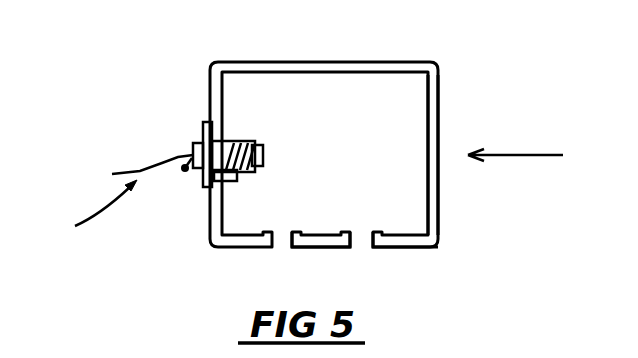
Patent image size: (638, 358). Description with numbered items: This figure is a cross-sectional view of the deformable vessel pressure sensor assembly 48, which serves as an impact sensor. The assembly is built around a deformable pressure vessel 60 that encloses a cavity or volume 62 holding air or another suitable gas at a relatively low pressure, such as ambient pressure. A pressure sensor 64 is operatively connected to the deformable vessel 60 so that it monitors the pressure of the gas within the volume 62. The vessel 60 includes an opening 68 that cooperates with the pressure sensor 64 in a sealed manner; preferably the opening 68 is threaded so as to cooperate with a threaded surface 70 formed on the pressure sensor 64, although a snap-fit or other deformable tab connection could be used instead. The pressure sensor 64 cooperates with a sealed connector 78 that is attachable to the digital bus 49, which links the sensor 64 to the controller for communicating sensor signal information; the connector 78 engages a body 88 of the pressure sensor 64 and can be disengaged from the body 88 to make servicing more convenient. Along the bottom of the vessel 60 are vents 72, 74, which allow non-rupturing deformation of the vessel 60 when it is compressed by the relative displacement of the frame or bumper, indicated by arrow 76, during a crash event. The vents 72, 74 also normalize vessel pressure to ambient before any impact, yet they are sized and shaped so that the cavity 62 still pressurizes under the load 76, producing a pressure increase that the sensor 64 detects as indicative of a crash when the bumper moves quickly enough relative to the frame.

The deformable vessel pressure sensor assembly 48 is at (84, 210).
The digital bus 49 is at (122, 177).
The deformable pressure vessel 60 is at (438, 62).
The cavity or volume 62 is at (418, 97).
The pressure sensor 64 is at (181, 172).
The opening 68 is at (232, 132).
The threaded surface 70 is at (255, 138).
The vent 72 is at (279, 243).
The vent 74 is at (362, 243).
The arrow indicating relative displacement 76 is at (537, 152).
The sealed connector 78 is at (191, 150).
The body 88 is at (201, 128).